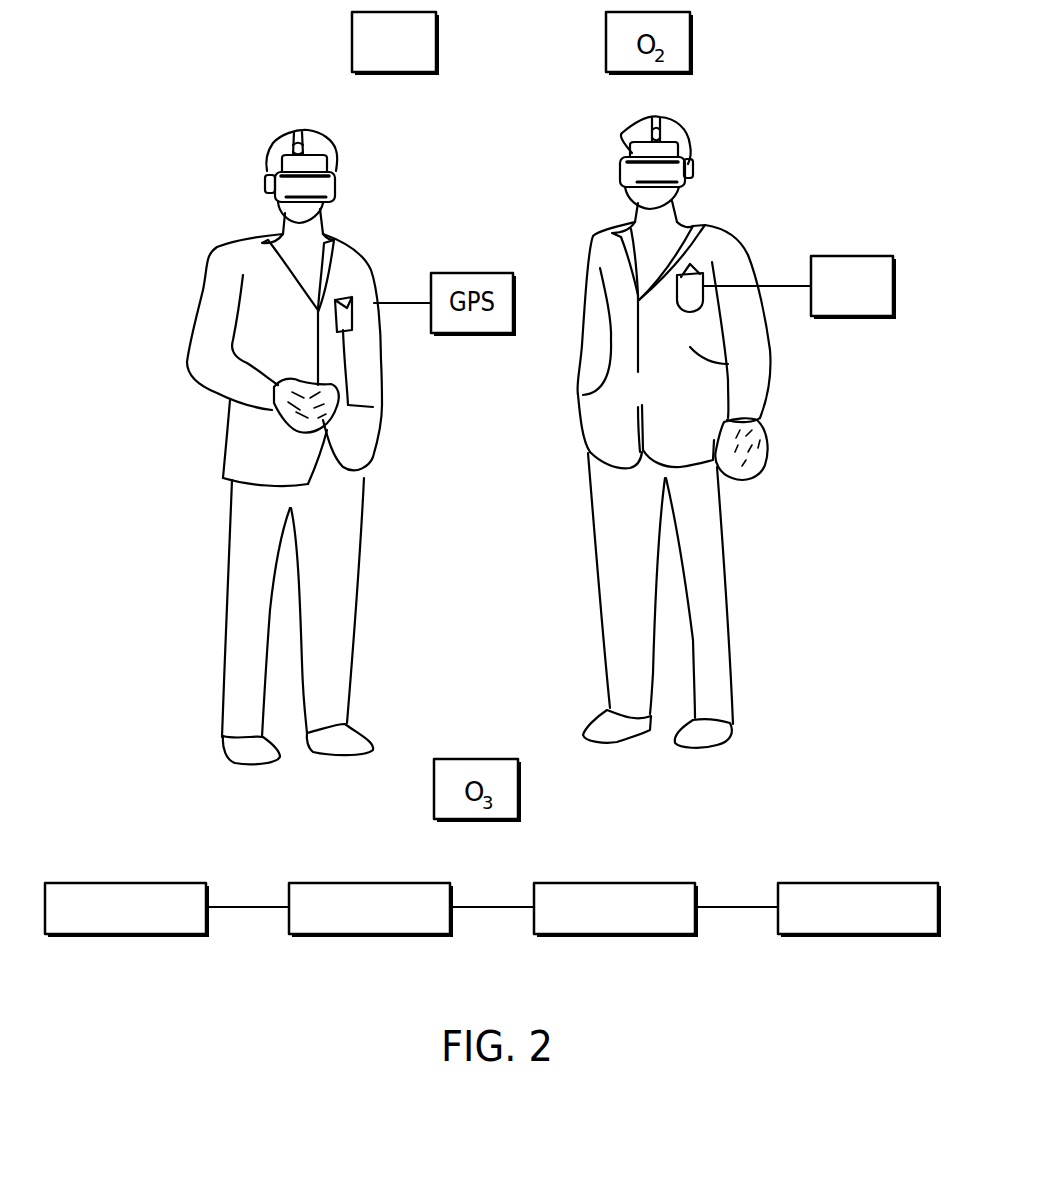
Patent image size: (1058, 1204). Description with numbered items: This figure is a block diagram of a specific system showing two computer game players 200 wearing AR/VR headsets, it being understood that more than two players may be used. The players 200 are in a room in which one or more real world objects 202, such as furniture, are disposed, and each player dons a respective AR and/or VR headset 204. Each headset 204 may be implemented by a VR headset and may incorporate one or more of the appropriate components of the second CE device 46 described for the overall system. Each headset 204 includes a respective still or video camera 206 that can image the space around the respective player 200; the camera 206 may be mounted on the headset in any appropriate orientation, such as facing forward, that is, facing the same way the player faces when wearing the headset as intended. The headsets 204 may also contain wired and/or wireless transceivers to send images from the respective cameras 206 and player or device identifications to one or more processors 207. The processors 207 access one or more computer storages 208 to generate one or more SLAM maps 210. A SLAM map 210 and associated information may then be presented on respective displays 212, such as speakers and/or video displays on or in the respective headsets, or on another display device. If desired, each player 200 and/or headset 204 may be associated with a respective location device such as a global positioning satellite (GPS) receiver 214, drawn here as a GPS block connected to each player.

The computer game player 200 is at (681, 432).
The real world object 202 is at (439, 42).
The AR and/or VR headset 204 is at (620, 172).
The still or video camera 206 is at (337, 184).
The second CE device 46 is at (264, 180).
The processor 207 is at (372, 938).
The computer storage 208 is at (128, 938).
The SLAM map 210 is at (616, 938).
The display 212 is at (860, 938).
The global positioning satellite (GPS) receiver 214 is at (897, 288).